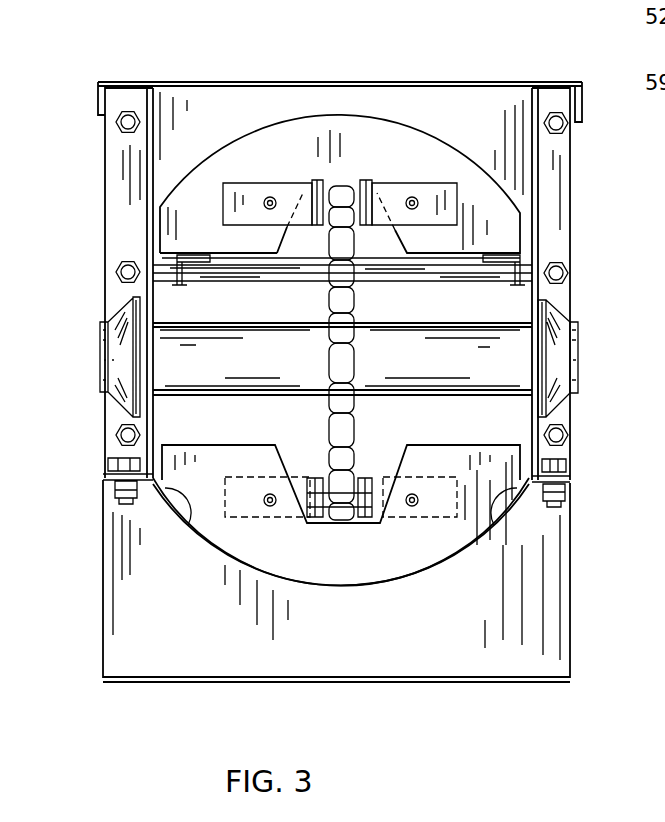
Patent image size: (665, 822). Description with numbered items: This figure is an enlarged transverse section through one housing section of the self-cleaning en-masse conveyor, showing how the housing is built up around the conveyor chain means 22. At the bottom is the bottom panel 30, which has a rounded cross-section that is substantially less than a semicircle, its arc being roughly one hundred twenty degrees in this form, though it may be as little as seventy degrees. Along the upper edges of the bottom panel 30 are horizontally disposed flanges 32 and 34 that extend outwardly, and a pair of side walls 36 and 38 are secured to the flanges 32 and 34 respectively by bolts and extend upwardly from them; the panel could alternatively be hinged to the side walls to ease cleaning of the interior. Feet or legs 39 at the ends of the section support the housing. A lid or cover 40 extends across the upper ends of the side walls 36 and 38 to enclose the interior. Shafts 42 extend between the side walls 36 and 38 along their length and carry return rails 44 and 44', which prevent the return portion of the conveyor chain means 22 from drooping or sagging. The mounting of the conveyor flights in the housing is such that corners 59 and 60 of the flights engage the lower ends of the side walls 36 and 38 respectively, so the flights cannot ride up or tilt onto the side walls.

The lid 40 is at (460, 82).
The feet 39 is at (401, 657).
The flange 32 is at (103, 486).
The flange 34 is at (568, 485).
The shaft 42 is at (447, 278).
The return rail 44 is at (192, 207).
The return rail 44' is at (570, 255).
The side wall 36 is at (148, 430).
The side wall 38 is at (532, 430).
The bottom panel 30 is at (428, 575).
The corner 59 is at (188, 522).
The corner 60 is at (491, 540).
The conveyor chain means 22 is at (353, 523).